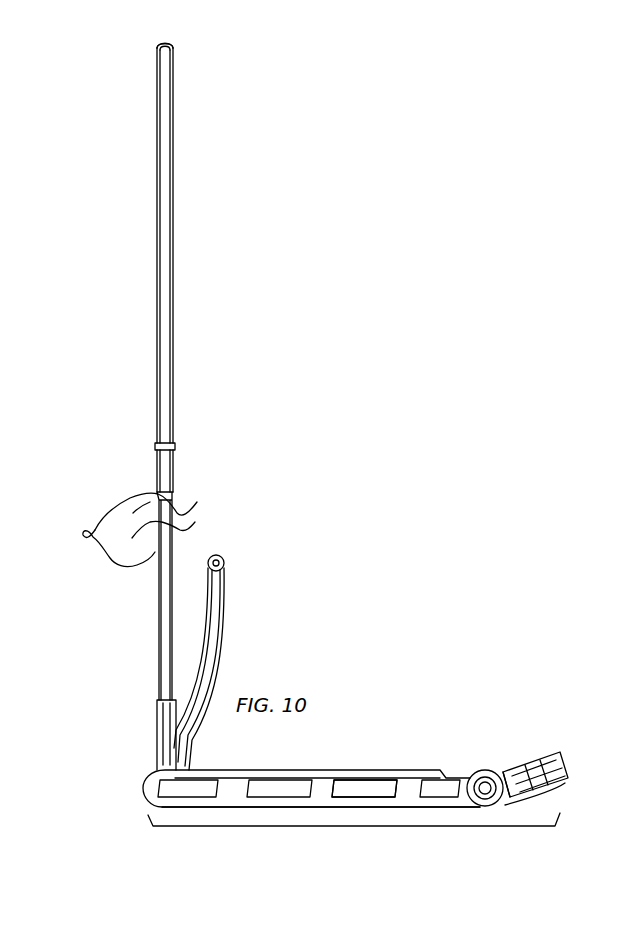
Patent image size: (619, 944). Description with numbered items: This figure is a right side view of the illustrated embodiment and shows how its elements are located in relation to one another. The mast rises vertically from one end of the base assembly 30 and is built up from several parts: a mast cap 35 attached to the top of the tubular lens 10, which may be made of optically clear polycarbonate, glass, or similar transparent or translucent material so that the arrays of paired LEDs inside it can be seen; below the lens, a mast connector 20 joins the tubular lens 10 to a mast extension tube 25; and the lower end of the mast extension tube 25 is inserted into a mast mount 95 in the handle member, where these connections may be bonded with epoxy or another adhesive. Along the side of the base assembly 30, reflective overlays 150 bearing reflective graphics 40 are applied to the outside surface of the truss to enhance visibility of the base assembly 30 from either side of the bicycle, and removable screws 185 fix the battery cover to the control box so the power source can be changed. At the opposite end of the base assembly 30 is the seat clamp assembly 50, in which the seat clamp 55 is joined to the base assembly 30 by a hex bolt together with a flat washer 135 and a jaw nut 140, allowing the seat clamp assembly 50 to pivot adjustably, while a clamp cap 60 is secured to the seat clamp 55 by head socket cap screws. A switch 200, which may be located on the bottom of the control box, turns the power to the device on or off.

The tubular lens 10 is at (157, 283).
The mast cap 35 is at (175, 47).
The mast connector 20 is at (176, 470).
The mast extension tube 25 is at (130, 529).
The mast mount 95 is at (155, 716).
The reflective overlays 150 is at (146, 790).
The reflective graphics 40 is at (345, 788).
The removable screws 185 is at (366, 778).
The flat washer 135 is at (478, 772).
The jaw nut 140 is at (492, 772).
The seat clamp 55 is at (510, 770).
The clamp cap 60 is at (552, 760).
The seat clamp assembly 50 is at (535, 804).
The base assembly 30 is at (352, 827).
The switch 200 is at (392, 812).